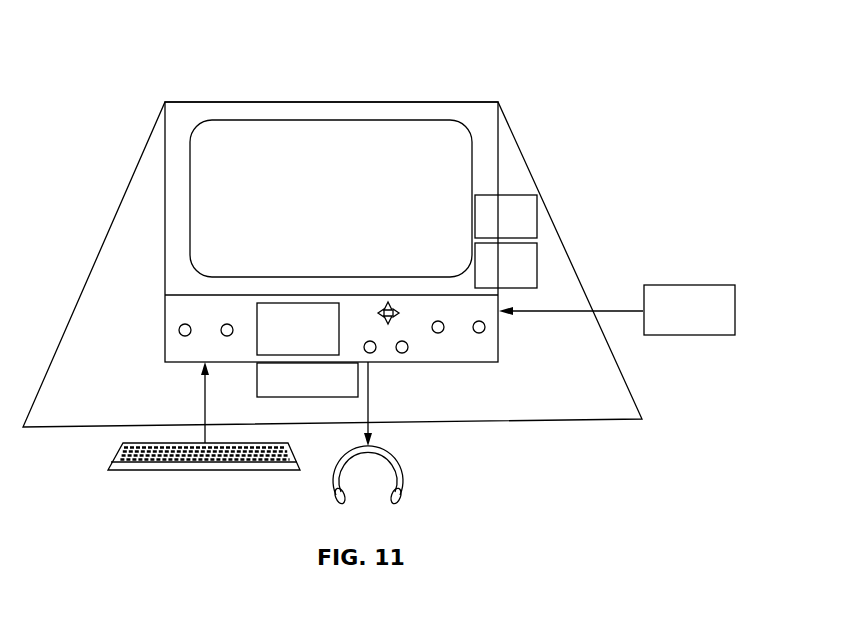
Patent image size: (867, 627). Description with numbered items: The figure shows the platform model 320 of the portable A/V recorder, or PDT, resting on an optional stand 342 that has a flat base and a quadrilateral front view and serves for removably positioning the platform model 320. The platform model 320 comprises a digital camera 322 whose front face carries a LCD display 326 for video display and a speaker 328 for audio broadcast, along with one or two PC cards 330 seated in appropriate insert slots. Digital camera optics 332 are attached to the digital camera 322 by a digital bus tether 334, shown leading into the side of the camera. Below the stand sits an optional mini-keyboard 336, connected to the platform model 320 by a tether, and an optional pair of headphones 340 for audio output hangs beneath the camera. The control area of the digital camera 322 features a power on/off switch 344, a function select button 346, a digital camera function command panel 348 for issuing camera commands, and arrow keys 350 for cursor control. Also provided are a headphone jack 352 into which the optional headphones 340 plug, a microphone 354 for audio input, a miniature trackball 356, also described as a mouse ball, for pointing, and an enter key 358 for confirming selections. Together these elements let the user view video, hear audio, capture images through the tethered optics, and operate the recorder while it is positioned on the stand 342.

The platform model 320 is at (121, 62).
The digital camera 322 is at (165, 332).
The LCD display 326 is at (350, 208).
The speaker 328 is at (358, 385).
The PC cards 330 is at (537, 217).
The digital camera optics 332 is at (697, 285).
The digital bus tether 334 is at (614, 311).
The mini-keyboard 336 is at (117, 465).
The headphones 340 is at (343, 500).
The stand 342 is at (92, 405).
The power on/off switch 344 is at (185, 336).
The function select button 346 is at (227, 336).
The digital camera function command panel 348 is at (298, 303).
The arrow keys 350 is at (388, 302).
The headphone jack 352 is at (374, 352).
The microphone 354 is at (406, 352).
The miniature trackball 356 is at (439, 333).
The enter key 358 is at (485, 327).